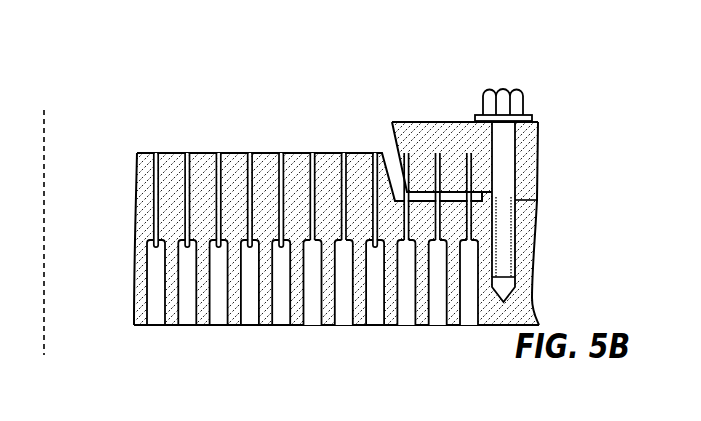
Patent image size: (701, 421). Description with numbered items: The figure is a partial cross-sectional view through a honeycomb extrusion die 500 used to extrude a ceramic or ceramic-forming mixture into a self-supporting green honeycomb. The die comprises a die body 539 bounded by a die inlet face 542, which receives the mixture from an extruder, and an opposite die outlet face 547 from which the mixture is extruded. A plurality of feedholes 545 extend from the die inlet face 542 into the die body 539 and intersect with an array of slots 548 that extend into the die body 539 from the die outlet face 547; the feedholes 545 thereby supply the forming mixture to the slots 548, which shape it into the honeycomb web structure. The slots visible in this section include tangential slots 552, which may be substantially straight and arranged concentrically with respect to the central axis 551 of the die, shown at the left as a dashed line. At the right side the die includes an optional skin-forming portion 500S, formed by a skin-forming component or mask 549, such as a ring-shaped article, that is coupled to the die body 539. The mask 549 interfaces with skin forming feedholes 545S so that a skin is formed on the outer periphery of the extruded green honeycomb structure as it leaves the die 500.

The honeycomb extrusion die 500 is at (150, 111).
The skin-forming portion 500S is at (406, 145).
The die body 539 is at (238, 141).
The die inlet face 542 is at (203, 323).
The feedholes 545 is at (335, 311).
The skin forming feedholes 545S is at (397, 311).
The die outlet face 547 is at (293, 152).
The slots 548 is at (188, 142).
The skin-forming component or mask 549 is at (443, 121).
The central axis 551 is at (46, 133).
The tangential slots 552 is at (313, 152).